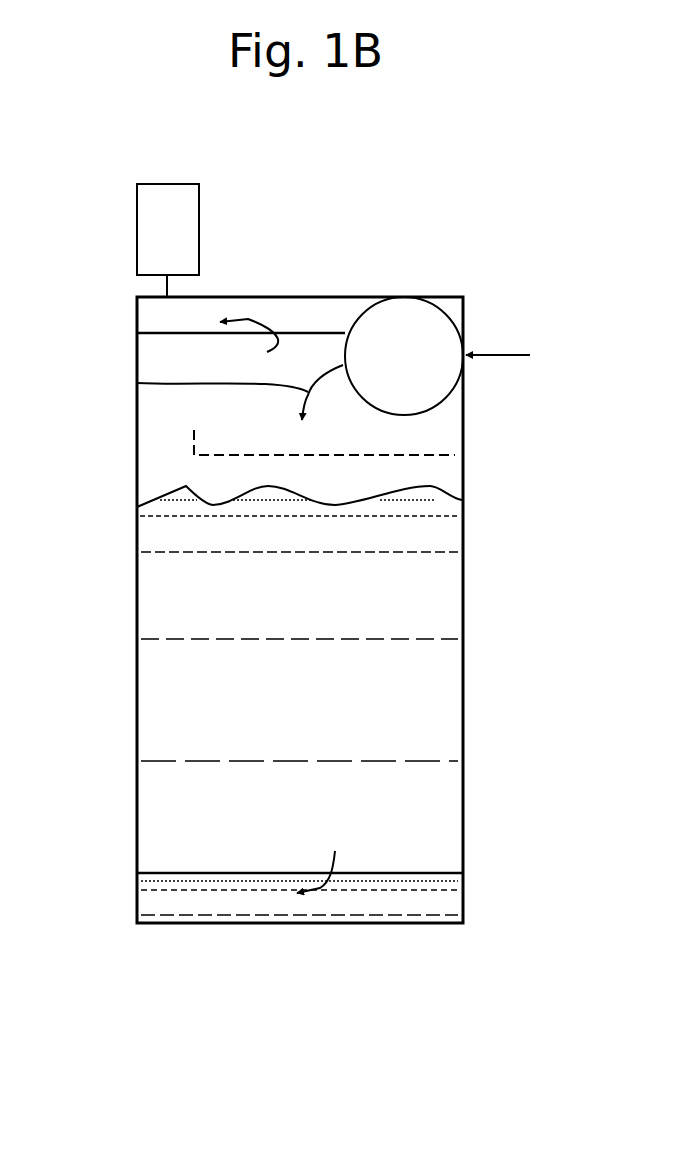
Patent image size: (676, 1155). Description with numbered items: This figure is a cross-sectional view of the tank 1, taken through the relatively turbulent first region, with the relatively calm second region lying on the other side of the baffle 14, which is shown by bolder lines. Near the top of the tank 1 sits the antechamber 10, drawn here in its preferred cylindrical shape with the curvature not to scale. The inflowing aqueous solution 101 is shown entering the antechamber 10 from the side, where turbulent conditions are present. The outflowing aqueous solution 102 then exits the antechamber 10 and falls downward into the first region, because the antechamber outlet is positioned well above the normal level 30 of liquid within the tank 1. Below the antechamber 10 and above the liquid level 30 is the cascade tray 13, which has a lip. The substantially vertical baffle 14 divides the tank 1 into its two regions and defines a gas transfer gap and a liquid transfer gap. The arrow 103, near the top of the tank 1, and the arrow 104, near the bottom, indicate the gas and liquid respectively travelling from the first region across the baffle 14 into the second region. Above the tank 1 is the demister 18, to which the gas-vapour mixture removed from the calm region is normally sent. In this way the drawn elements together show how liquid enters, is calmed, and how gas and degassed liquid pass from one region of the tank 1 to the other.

The tank 1 is at (348, 258).
The demister 18 is at (137, 214).
The arrow denoting gas transfer gap 103 is at (248, 318).
The antechamber 10 is at (437, 305).
The inflowing aqueous solution 101 is at (515, 354).
The outflowing aqueous solution 102 is at (137, 383).
The cascade tray 13 is at (449, 455).
The normal level of liquid 30 is at (447, 487).
The baffle 14 is at (435, 873).
The arrow denoting liquid transfer gap 104 is at (328, 884).